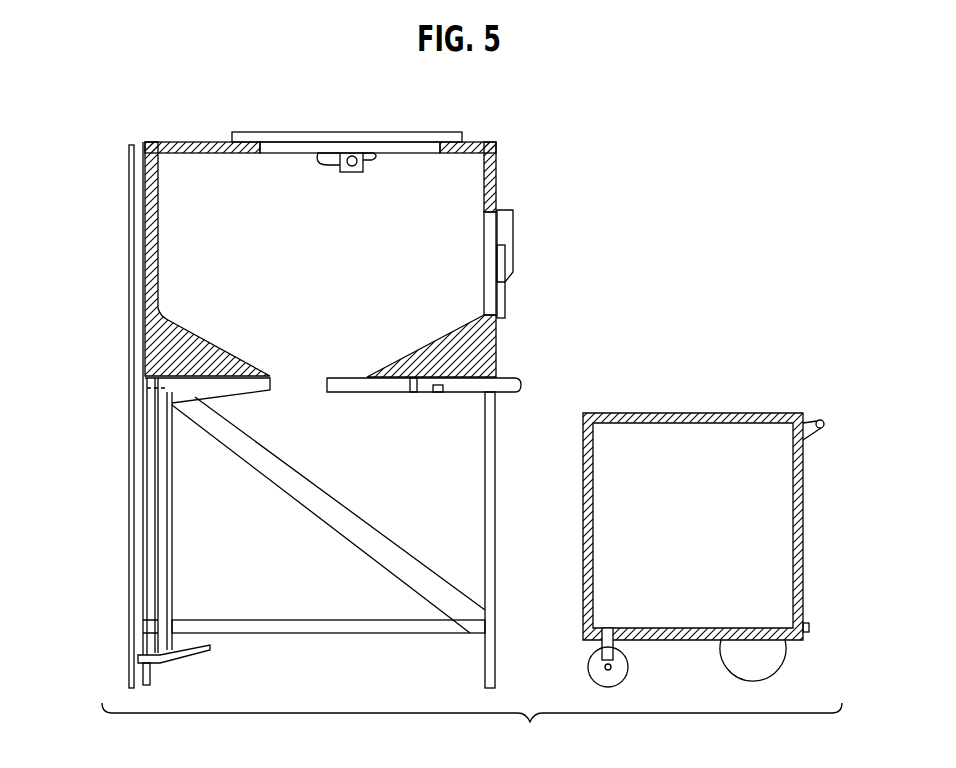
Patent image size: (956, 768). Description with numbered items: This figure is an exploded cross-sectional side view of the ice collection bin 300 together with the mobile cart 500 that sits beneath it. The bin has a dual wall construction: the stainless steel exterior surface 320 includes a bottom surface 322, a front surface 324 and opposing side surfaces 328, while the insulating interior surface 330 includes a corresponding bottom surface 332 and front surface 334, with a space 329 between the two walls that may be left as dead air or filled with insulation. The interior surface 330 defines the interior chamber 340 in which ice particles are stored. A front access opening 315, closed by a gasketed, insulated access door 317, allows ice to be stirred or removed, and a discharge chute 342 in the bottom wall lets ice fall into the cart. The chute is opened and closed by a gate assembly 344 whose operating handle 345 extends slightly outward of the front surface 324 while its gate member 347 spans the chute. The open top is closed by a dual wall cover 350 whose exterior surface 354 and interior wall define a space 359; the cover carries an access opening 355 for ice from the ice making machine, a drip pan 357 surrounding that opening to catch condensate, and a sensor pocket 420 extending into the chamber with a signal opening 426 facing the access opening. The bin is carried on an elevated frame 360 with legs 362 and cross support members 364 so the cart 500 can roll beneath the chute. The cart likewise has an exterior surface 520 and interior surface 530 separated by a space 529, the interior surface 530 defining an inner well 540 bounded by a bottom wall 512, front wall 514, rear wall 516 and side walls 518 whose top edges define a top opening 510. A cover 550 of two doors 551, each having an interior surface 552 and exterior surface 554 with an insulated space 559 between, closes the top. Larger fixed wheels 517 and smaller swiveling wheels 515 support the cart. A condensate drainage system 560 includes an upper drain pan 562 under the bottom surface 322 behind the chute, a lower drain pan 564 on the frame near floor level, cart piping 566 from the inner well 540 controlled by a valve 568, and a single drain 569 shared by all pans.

The ice collection bin 300 is at (518, 307).
The front access opening 315 is at (484, 255).
The access door 317 is at (514, 224).
The exterior surface 320 is at (141, 266).
The bottom surface 322 is at (165, 393).
The front surface 324 is at (500, 168).
The opposing side surfaces 328 is at (447, 310).
The space 329 is at (172, 322).
The interior surface 330 is at (166, 268).
The bottom surface 332 is at (160, 346).
The front surface 334 is at (492, 190).
The interior chamber 340 is at (279, 175).
The discharge chute 342 is at (300, 376).
The gate assembly 344 is at (407, 395).
The operating handle 345 is at (522, 384).
The gate member 347 is at (302, 395).
The cover 350 is at (506, 145).
The exterior surface 354 is at (216, 142).
The access opening 355 is at (415, 148).
The drip pan 357 is at (452, 132).
The space 359 is at (168, 142).
The elevated frame 360 is at (395, 633).
The legs 362 is at (488, 508).
The cross support members 364 is at (296, 620).
The sensor pocket 420 is at (320, 150).
The signal opening 426 is at (381, 148).
The cart 500 is at (855, 470).
The top opening 510 is at (603, 413).
The bottom wall 512 is at (693, 642).
The front wall 514 is at (586, 570).
The wheels 515 is at (603, 678).
The rear wall 516 is at (804, 543).
The wheels 517 is at (779, 660).
The side walls 518 is at (766, 594).
The exterior surface 520 is at (581, 485).
The space 529 is at (588, 535).
The interior surface 530 is at (597, 477).
The inner well 540 is at (726, 450).
The cover 550 is at (699, 411).
The doors 551 is at (788, 413).
The interior surface 552 is at (625, 423).
The exterior surface 554 is at (648, 413).
The space 559 is at (667, 413).
The condensate drainage system 560 is at (130, 504).
The upper drain pan 562 is at (247, 392).
The lower drain pan 564 is at (196, 655).
The piping 566 is at (603, 646).
The valve 568 is at (808, 627).
The drain 569 is at (128, 676).